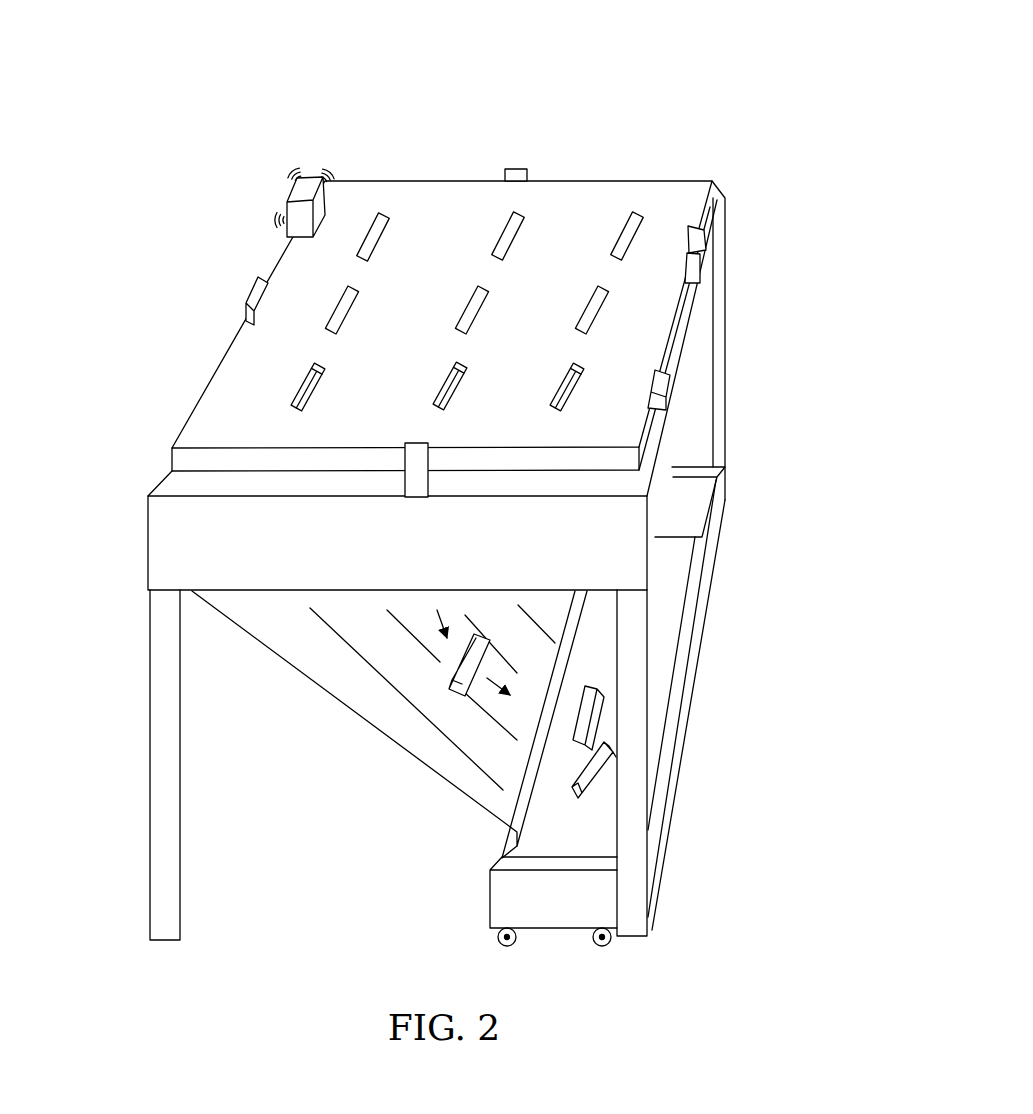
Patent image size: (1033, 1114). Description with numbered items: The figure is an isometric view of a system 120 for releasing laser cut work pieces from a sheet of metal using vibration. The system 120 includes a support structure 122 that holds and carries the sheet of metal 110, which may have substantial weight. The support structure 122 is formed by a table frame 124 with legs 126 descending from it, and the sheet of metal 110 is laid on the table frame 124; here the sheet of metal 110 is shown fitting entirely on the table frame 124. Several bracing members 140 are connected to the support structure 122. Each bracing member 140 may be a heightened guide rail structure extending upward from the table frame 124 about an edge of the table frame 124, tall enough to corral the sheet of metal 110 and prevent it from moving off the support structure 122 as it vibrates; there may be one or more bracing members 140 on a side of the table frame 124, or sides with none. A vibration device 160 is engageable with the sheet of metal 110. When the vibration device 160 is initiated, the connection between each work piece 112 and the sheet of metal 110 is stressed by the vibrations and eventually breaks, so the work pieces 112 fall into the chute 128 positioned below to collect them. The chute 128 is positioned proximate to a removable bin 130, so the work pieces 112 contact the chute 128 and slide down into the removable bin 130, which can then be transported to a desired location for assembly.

The sheet of metal 110 is at (607, 197).
The work piece 112 is at (373, 222).
The system for releasing laser cut work pieces from a sheet of metal 120 is at (572, 90).
The support structure 122 is at (136, 551).
The table frame 124 is at (177, 486).
The legs 126 is at (726, 404).
The chute 128 is at (332, 686).
The removable bin 130 is at (677, 747).
The bracing member 140 is at (515, 168).
The vibration device 160 is at (308, 182).